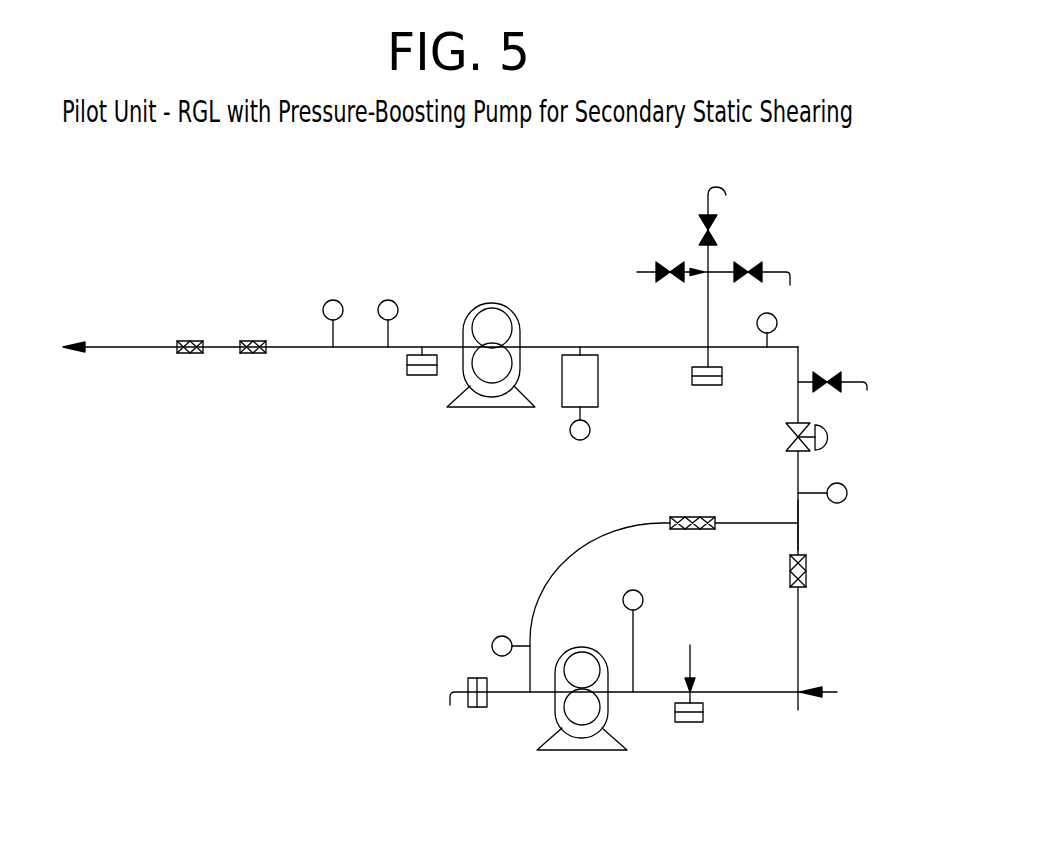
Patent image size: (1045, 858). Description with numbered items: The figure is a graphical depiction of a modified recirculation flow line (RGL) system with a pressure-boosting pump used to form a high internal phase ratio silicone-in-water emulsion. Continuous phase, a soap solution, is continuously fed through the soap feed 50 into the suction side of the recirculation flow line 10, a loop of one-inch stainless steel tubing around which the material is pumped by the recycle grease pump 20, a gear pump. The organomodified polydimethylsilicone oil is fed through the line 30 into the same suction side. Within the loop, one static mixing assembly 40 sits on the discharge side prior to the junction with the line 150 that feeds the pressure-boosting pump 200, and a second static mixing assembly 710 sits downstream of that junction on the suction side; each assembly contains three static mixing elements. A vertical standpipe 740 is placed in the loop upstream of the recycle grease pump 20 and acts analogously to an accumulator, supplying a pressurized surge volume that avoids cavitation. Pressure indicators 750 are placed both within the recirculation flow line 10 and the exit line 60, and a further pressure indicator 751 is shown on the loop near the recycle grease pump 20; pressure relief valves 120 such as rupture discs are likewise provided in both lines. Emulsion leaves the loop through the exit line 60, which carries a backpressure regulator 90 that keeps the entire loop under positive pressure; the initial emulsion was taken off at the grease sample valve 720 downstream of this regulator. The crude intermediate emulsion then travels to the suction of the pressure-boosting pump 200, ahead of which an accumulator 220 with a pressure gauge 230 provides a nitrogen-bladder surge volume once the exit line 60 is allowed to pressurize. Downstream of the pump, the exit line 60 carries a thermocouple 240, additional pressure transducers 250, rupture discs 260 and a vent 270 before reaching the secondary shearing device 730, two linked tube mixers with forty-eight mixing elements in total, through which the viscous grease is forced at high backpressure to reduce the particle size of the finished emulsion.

The recirculation flow line 10 is at (550, 578).
The recycle grease pump 20 is at (598, 752).
The line 30 is at (697, 645).
The static mixing assembly 40 is at (688, 517).
The soap feed 50 is at (825, 692).
The exit line 60 is at (128, 347).
The backpressure regulator 90 is at (835, 437).
The pressure relief valves 120 is at (690, 722).
The line 150 is at (800, 508).
The pressure-boosting pump 200 is at (488, 410).
The accumulator 220 is at (603, 385).
The pressure gauge 230 is at (590, 432).
The thermocouple 240 is at (333, 300).
The pressure transducers 250 is at (395, 301).
The rupture discs 260 is at (418, 378).
The vent 270 is at (716, 187).
The static mixing assembly 710 is at (810, 575).
The grease sample valve 720 is at (835, 382).
The secondary shearing device 730 is at (258, 341).
The vertical standpipe 740 is at (630, 632).
The pressure indicators 750 is at (845, 487).
The pressure sensor 751 is at (488, 645).